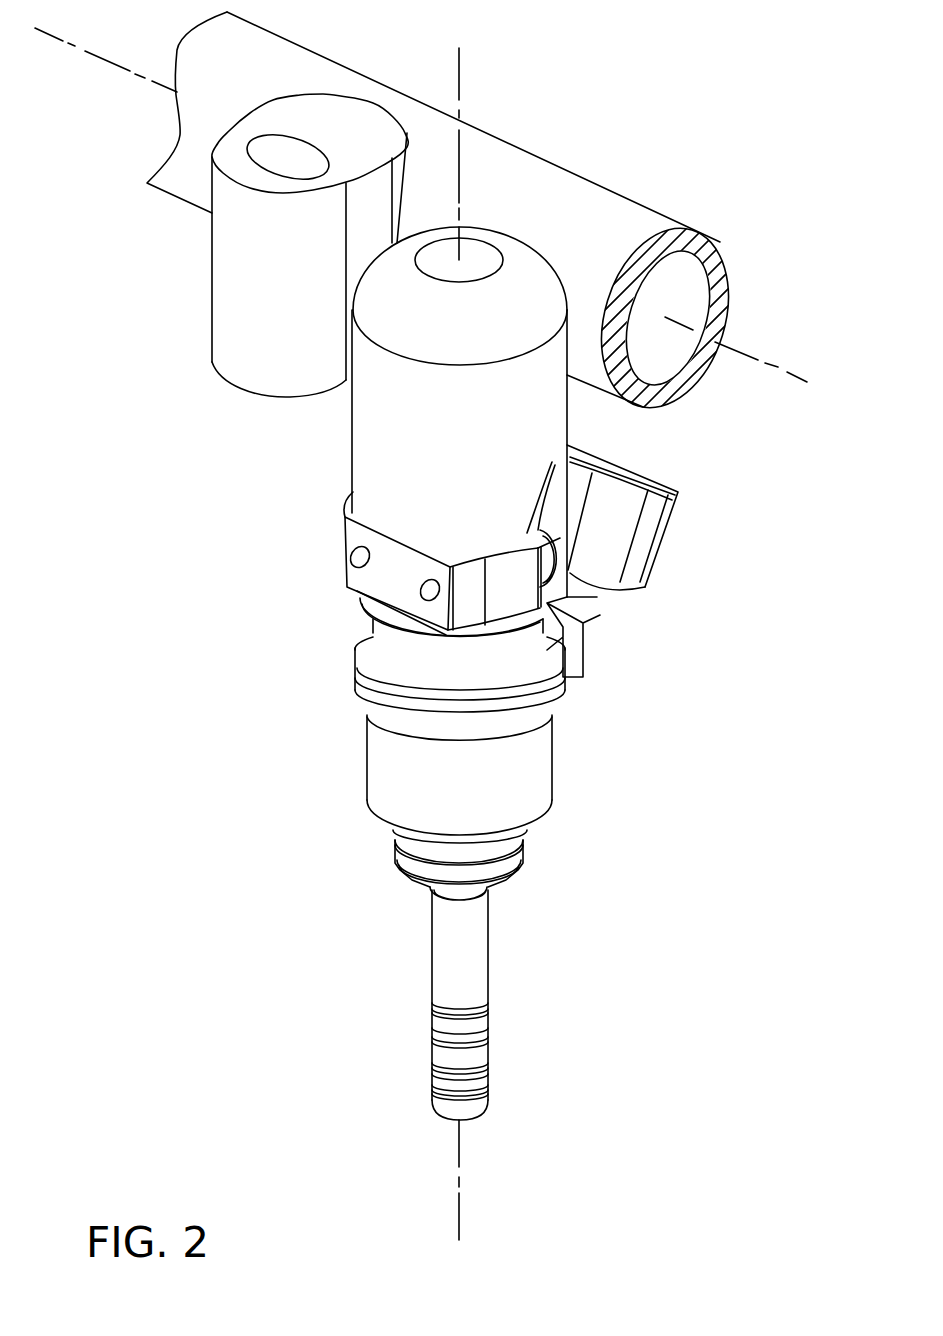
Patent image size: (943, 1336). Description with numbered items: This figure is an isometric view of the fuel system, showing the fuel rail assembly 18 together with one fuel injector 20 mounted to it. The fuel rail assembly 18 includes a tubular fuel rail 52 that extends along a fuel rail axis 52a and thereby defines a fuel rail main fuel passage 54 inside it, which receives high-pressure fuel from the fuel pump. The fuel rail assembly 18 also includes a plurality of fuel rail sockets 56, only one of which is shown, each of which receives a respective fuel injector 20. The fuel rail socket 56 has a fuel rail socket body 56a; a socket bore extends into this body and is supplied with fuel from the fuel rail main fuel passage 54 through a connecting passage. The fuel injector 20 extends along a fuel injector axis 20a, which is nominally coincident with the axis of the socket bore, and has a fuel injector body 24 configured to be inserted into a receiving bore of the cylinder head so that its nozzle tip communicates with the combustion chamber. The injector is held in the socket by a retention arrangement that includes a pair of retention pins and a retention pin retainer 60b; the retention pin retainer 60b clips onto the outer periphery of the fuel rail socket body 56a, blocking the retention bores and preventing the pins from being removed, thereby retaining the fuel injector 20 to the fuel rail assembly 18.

The fuel rail assembly 18 is at (435, 250).
The fuel injector 20 is at (396, 644).
The fuel injector axis 20a is at (460, 1217).
The fuel injector body 24 is at (540, 773).
The fuel rail 52 is at (540, 177).
The fuel rail axis 52a is at (793, 378).
The fuel rail main fuel passage 54 is at (660, 357).
The fuel rail socket 56 is at (341, 431).
The fuel rail socket body 56a is at (370, 465).
The retention pin retainer 60b is at (357, 575).